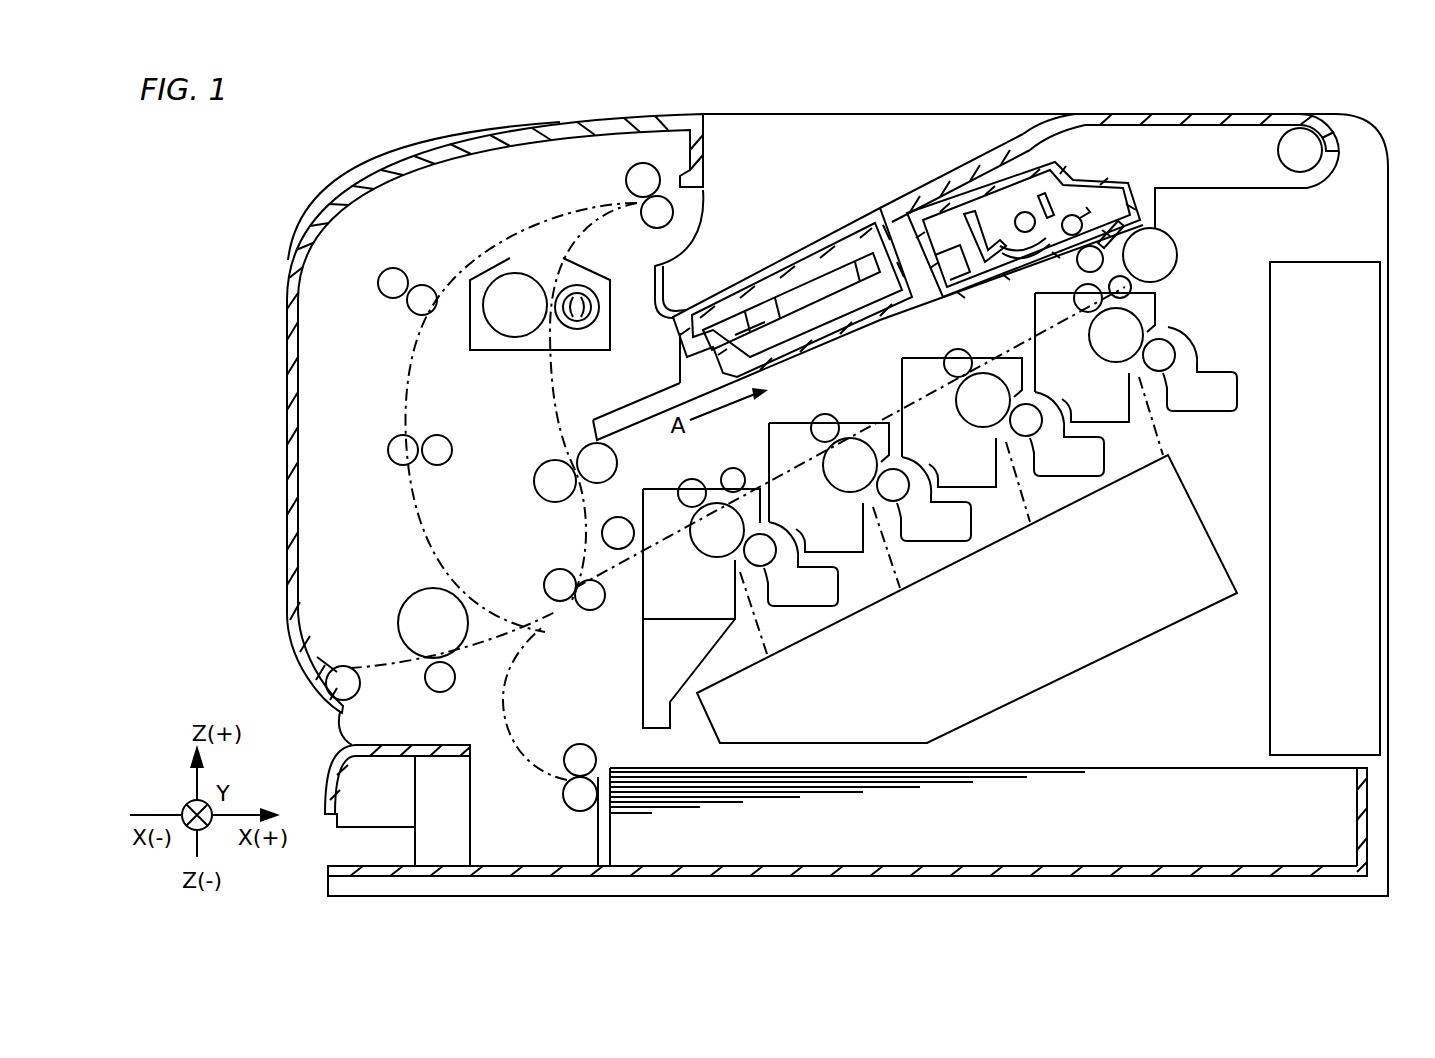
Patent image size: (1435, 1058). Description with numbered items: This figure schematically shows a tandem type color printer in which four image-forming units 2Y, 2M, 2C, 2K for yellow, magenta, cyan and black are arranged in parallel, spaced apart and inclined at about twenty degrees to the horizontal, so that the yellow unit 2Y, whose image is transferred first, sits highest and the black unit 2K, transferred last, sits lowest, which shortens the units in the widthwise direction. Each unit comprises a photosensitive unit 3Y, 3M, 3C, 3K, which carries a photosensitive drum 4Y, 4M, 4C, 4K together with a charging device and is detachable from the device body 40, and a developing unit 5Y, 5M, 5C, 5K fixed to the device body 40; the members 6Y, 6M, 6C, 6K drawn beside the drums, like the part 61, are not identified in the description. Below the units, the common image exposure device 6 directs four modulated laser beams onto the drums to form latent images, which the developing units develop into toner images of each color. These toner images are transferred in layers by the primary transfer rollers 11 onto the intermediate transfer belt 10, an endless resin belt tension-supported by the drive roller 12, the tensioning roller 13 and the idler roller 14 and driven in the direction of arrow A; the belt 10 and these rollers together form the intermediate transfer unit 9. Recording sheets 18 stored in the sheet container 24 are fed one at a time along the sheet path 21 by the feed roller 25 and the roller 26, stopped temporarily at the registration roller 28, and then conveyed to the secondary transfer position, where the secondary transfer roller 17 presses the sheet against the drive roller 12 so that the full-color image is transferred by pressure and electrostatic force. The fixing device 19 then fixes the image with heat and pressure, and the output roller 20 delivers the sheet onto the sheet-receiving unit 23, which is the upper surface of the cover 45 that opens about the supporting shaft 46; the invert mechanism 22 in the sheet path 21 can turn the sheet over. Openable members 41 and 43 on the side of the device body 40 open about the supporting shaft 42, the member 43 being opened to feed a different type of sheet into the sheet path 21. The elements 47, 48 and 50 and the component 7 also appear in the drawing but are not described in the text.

The device body 40 is at (1322, 118).
The openable member 41 is at (313, 218).
The openable member 43 is at (287, 526).
The supporting shaft 42 is at (336, 704).
The cover 45 is at (1168, 118).
The supporting shaft 46 is at (1300, 136).
The cover 47 is at (947, 172).
The hinge portion 48 is at (1002, 144).
The sheet-receiving unit 23 is at (921, 146).
The controller 7 is at (1381, 530).
The sheet container 24 is at (1368, 817).
The recording sheet 18 is at (1013, 767).
The output roller 20 is at (628, 184).
The fixing device 19 is at (596, 262).
The invert mechanism 22 is at (412, 522).
The sheet path 21 is at (548, 428).
The secondary transfer roller 17 is at (536, 486).
The drive roller 12 is at (592, 444).
The registration roller 28 is at (556, 570).
The roller 26 is at (583, 745).
The feed roller 25 is at (574, 805).
The idler roller 14 is at (626, 518).
The intermediate transfer unit 9 is at (664, 396).
The intermediate transfer belt 10 is at (632, 422).
The fixing unit 50 is at (1085, 172).
The tensioning roller 13 is at (1178, 255).
The image exposure device 6 is at (1133, 642).
The photosensitive unit 3K is at (645, 489).
The photosensitive drum 4K is at (720, 557).
The developing roller (black) 6K is at (770, 567).
The developing unit 5K is at (815, 608).
The primary transfer roller 11 is at (692, 480).
The cleaning roller 61 is at (737, 468).
The image-forming unit 2K is at (630, 615).
The photosensitive unit 3C is at (772, 423).
The photosensitive drum 4C is at (848, 492).
The developing roller (cyan) 6C is at (895, 502).
The developing unit 5C is at (947, 543).
The image-forming unit 2C is at (862, 580).
The photosensitive unit 3M is at (902, 372).
The photosensitive drum 4M is at (980, 427).
The developing roller (magenta) 6M is at (1028, 437).
The developing unit 5M is at (1082, 478).
The image-forming unit 2M is at (997, 520).
The photosensitive unit 3Y is at (1035, 316).
The photosensitive drum 4Y is at (1108, 360).
The developing roller (yellow) 6Y is at (1170, 342).
The developing unit 5Y is at (1213, 413).
The image-forming unit 2Y is at (1132, 460).